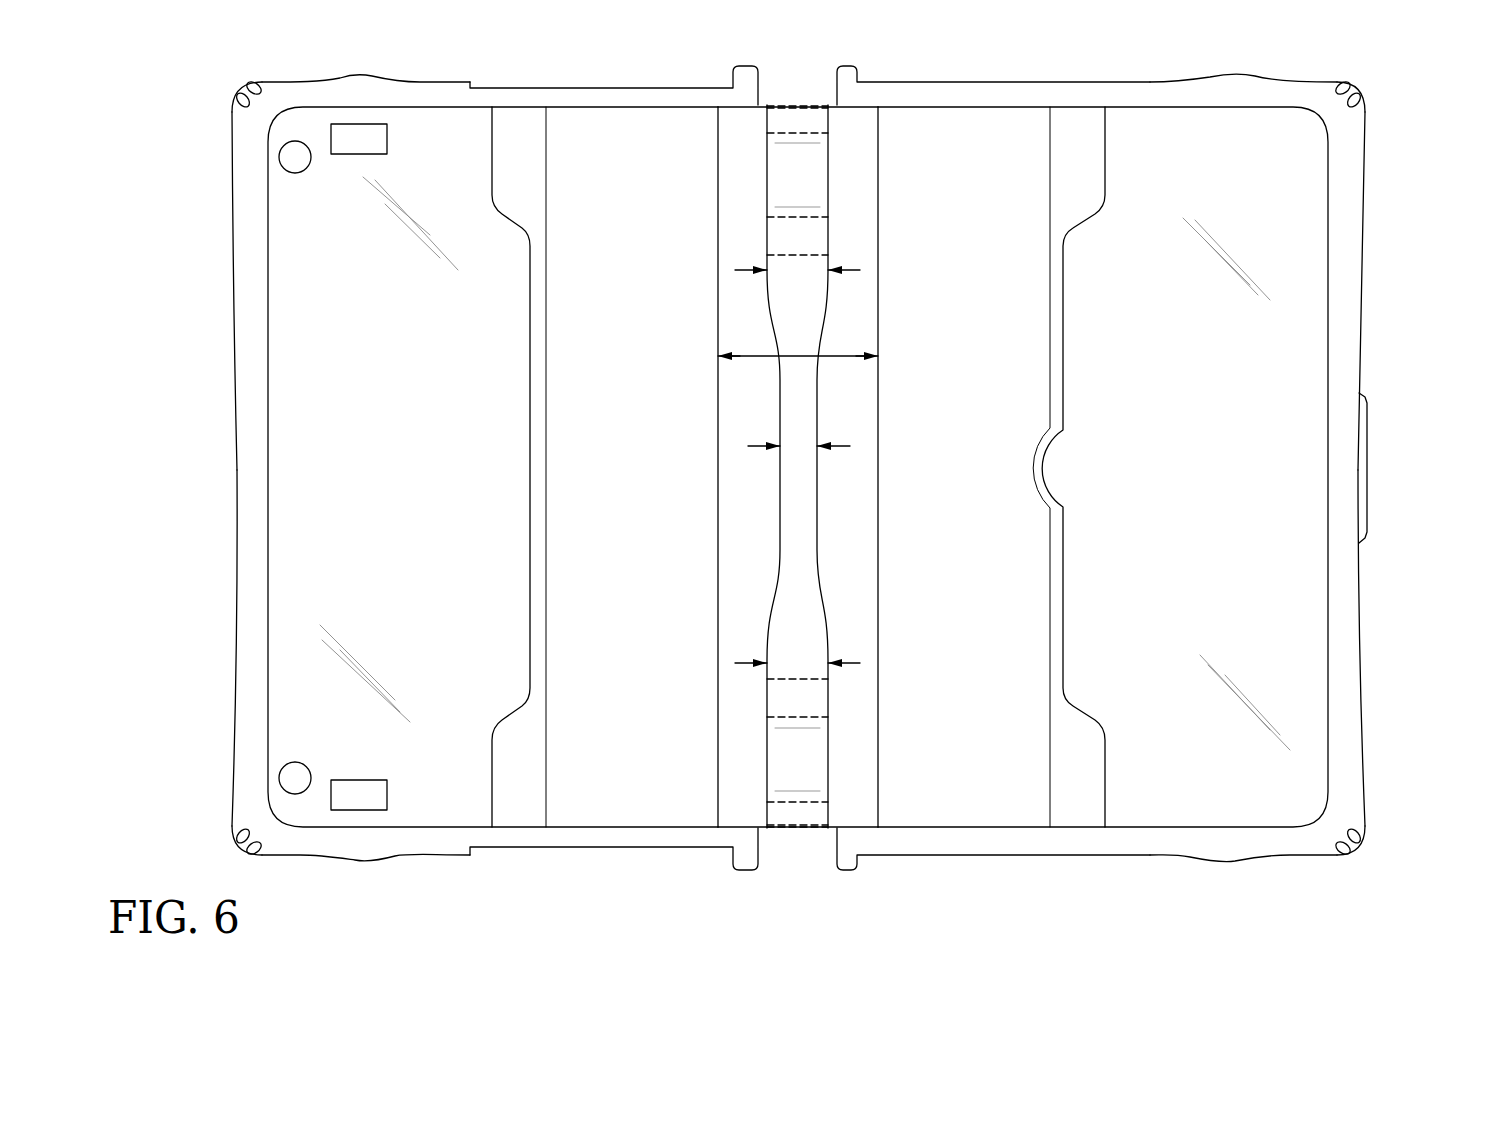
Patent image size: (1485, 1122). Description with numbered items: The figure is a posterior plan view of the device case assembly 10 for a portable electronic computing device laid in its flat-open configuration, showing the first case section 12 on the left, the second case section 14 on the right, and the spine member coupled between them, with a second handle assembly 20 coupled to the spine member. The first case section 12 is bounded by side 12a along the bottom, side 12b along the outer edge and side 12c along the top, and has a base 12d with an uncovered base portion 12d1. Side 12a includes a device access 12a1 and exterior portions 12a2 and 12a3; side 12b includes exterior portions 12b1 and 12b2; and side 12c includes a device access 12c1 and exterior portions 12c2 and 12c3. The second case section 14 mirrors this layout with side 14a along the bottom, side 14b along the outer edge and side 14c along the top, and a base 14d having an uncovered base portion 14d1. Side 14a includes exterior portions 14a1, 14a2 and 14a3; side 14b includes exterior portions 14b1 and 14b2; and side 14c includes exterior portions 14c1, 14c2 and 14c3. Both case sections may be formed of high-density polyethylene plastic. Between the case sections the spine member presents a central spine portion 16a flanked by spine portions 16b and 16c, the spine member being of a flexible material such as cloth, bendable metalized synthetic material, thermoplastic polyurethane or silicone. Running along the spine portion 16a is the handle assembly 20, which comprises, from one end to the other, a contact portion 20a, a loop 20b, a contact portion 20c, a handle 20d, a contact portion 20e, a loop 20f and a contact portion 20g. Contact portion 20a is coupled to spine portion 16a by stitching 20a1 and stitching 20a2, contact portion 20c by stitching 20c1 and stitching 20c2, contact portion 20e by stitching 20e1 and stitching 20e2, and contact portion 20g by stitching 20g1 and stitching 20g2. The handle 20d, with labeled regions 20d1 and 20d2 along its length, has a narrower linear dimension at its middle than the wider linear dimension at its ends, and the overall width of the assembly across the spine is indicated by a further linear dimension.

The device case assembly 10 is at (1280, 44).
The first case section 12 is at (190, 224).
The side 12a is at (515, 866).
The device access 12a1 is at (605, 850).
The exterior portion 12a2 is at (318, 862).
The exterior portion 12a3 is at (250, 852).
The side 12b is at (215, 453).
The exterior portion 12b1 is at (232, 760).
The exterior portion 12b2 is at (232, 150).
The side 12c is at (542, 72).
The device access 12c1 is at (630, 88).
The exterior portion 12c2 is at (356, 75).
The exterior portion 12c3 is at (258, 90).
The base 12d is at (493, 467).
The uncovered base portion 12d1 is at (462, 467).
The second case section 14 is at (1395, 190).
The side 14a is at (1058, 870).
The exterior portion 14a1 is at (905, 870).
The exterior portion 14a2 is at (1268, 862).
The exterior portion 14a3 is at (1352, 856).
The side 14b is at (1380, 452).
The exterior portion 14b1 is at (1365, 760).
The exterior portion 14b2 is at (1365, 150).
The side 14c is at (1088, 72).
The exterior portion 14c1 is at (905, 68).
The exterior portion 14c2 is at (1232, 74).
The exterior portion 14c3 is at (1350, 84).
The base 14d is at (1103, 467).
The uncovered base portion 14d1 is at (1107, 467).
The spine portion 16a is at (858, 427).
The spine portion 16b is at (598, 467).
The spine portion 16c is at (994, 467).
The handle assembly 20 is at (795, 80).
The contact portion 20a is at (805, 813).
The stitching 20a1 is at (790, 802).
The stitching 20a2 is at (790, 825).
The loop 20b is at (805, 756).
The contact portion 20c is at (805, 696).
The stitching 20c1 is at (790, 679).
The stitching 20c2 is at (790, 717).
The handle 20d is at (829, 400).
The hinge central tapered region 20d1 is at (805, 296).
The hinge central narrow region 20d2 is at (805, 483).
The contact portion 20e is at (805, 234).
The stitching 20e1 is at (790, 217).
The stitching 20e2 is at (790, 255).
The loop 20f is at (805, 176).
The contact portion 20g is at (812, 118).
The stitching 20g1 is at (790, 115).
The stitching 20g2 is at (790, 133).